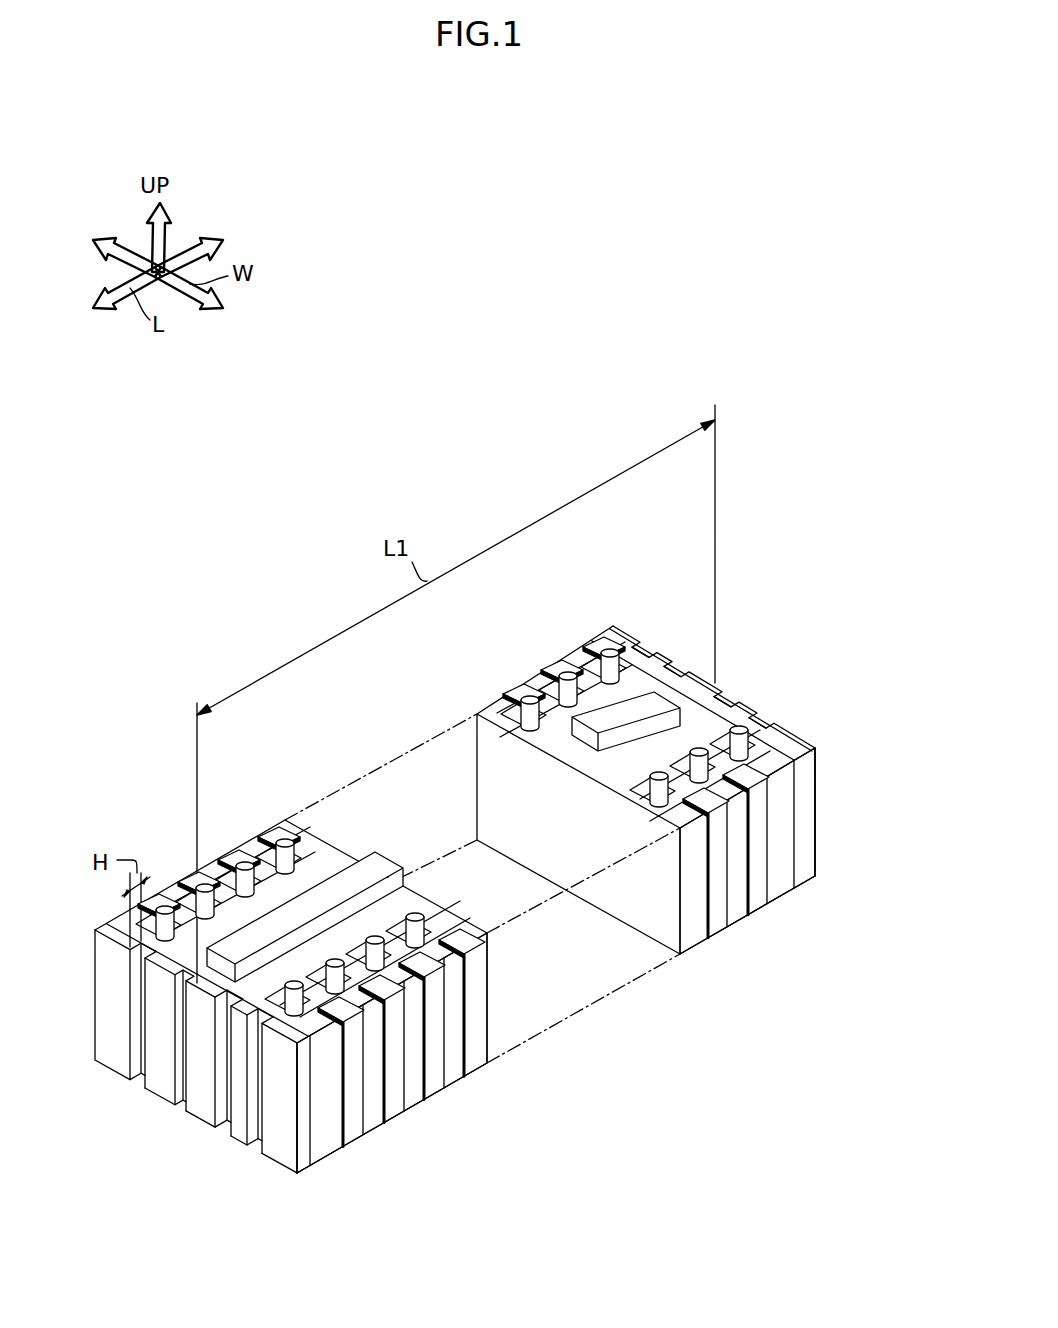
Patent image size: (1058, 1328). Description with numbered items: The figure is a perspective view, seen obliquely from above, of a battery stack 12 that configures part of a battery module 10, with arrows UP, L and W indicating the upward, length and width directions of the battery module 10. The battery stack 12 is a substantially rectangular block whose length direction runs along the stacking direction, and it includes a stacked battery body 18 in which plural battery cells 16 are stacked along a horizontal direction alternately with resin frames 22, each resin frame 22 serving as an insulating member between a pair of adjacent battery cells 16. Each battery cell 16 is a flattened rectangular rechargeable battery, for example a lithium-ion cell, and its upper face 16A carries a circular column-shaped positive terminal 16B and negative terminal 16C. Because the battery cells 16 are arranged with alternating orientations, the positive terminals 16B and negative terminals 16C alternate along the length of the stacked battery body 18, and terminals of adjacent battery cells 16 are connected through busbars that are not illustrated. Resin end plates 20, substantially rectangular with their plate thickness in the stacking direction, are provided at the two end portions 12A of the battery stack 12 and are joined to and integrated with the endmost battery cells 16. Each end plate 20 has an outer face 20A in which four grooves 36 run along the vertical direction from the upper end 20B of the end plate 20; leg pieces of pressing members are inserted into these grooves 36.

The battery module 10 is at (470, 902).
The battery stack 12 is at (637, 1078).
The end portion 12A is at (294, 1153).
The battery cell 16 is at (410, 1098).
The upper face 16A is at (633, 688).
The positive terminal 16B is at (608, 650).
The negative terminal 16C is at (570, 678).
The stacked battery body 18 is at (688, 957).
The end plate 20 is at (807, 874).
The outer face 20A is at (200, 1090).
The upper end 20B is at (118, 935).
The resin frame 22 is at (353, 1135).
The groove 36 is at (165, 1033).